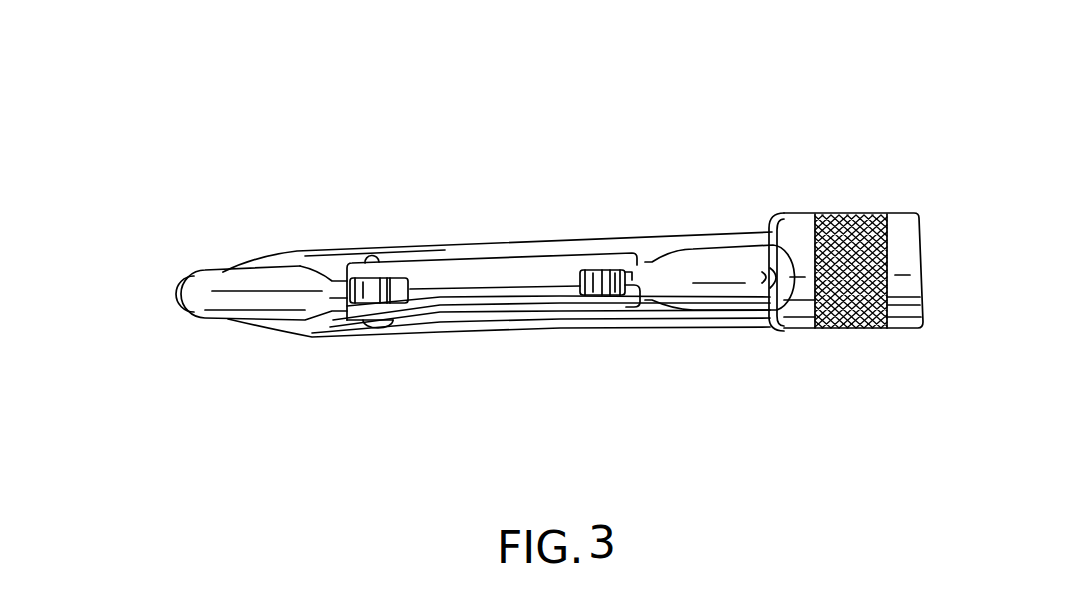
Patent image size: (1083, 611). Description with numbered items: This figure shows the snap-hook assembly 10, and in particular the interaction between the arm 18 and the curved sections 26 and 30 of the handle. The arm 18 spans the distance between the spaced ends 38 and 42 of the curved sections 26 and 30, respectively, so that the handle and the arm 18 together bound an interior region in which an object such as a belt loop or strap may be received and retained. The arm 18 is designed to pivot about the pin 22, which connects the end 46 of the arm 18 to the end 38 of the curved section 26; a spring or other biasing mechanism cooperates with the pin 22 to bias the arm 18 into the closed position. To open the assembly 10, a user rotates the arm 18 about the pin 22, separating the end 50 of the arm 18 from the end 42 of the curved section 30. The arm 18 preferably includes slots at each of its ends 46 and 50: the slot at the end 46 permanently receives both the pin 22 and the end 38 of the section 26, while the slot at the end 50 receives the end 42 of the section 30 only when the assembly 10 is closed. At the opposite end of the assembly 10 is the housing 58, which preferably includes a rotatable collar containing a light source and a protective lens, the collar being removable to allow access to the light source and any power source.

The snap-hook assembly 10 is at (647, 143).
The arm 18 is at (470, 288).
The pin 22 is at (375, 258).
The curved section 26 is at (190, 294).
The curved section 30 is at (728, 283).
The end of curved section 38 is at (334, 296).
The end of curved section 42 is at (620, 296).
The end of arm 46 is at (394, 305).
The end of arm 50 is at (598, 268).
The housing 58 is at (879, 208).